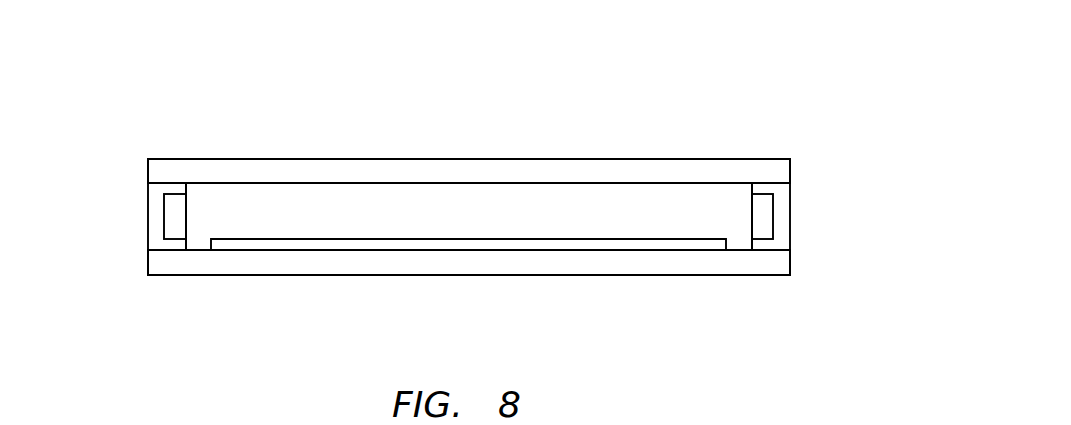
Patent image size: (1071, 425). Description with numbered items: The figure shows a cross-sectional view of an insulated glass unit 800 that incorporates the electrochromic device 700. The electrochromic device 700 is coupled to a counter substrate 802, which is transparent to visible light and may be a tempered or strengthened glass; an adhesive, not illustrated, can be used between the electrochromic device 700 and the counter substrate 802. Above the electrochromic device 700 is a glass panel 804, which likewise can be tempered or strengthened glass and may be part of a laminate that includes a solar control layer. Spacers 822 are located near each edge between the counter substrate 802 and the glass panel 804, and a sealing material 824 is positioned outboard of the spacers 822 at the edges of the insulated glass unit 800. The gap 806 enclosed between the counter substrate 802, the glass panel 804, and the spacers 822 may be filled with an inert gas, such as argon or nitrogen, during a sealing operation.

The insulated glass unit 800 is at (721, 57).
The counter substrate 802 is at (425, 267).
The glass panel 804 is at (402, 170).
The gap 806 is at (388, 226).
The electrochromic device 700 is at (511, 245).
The spacers 822 is at (178, 215).
The sealing material 824 is at (155, 220).